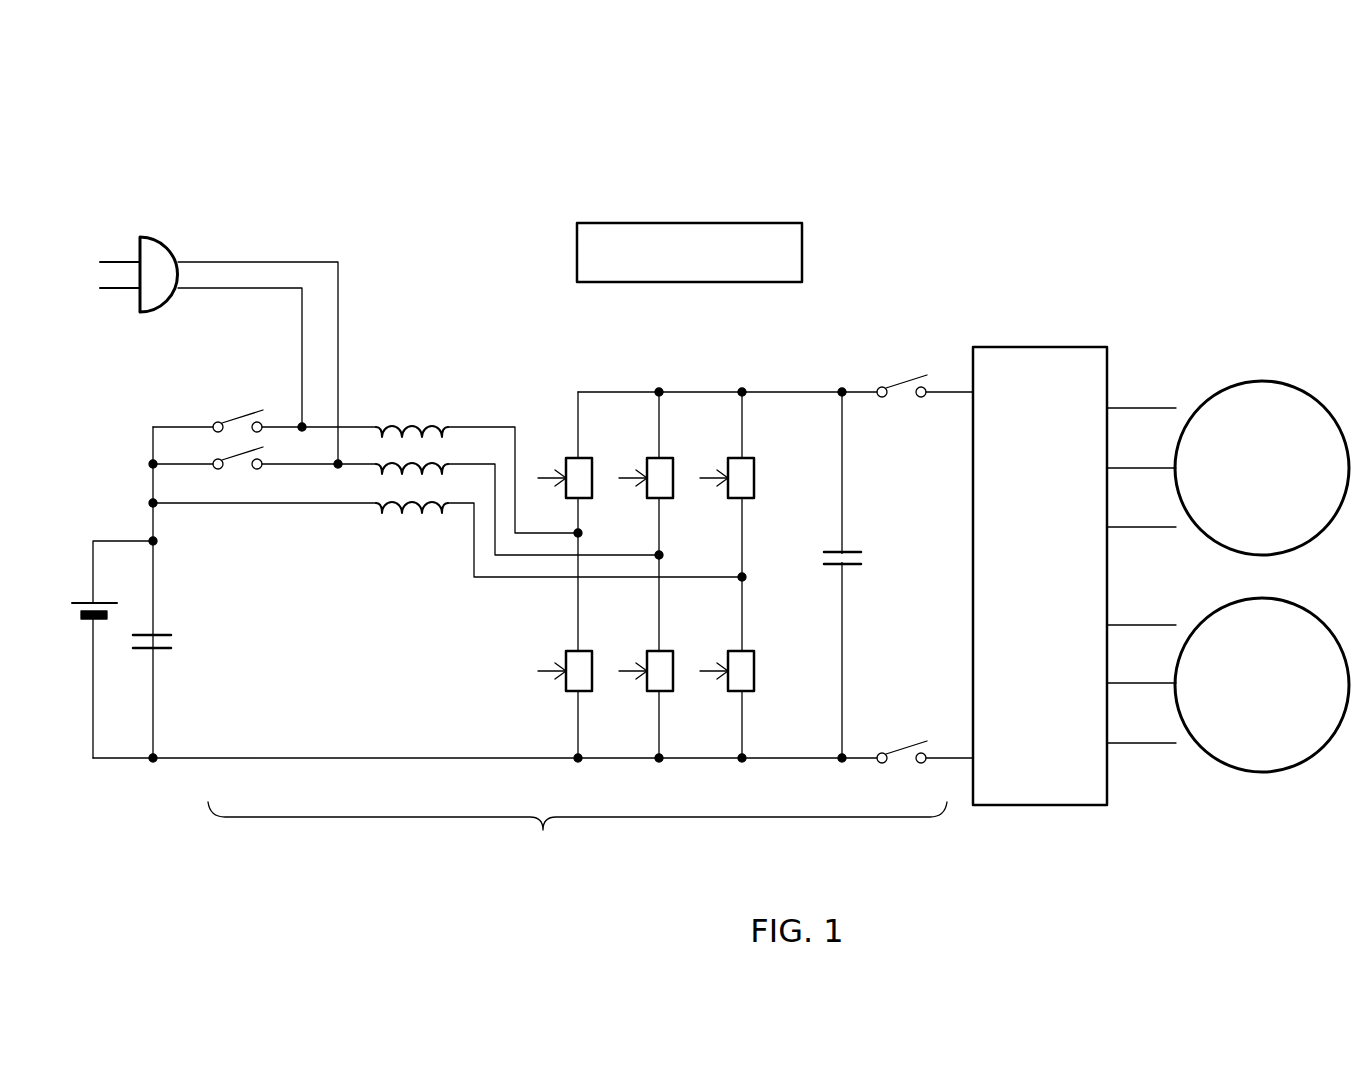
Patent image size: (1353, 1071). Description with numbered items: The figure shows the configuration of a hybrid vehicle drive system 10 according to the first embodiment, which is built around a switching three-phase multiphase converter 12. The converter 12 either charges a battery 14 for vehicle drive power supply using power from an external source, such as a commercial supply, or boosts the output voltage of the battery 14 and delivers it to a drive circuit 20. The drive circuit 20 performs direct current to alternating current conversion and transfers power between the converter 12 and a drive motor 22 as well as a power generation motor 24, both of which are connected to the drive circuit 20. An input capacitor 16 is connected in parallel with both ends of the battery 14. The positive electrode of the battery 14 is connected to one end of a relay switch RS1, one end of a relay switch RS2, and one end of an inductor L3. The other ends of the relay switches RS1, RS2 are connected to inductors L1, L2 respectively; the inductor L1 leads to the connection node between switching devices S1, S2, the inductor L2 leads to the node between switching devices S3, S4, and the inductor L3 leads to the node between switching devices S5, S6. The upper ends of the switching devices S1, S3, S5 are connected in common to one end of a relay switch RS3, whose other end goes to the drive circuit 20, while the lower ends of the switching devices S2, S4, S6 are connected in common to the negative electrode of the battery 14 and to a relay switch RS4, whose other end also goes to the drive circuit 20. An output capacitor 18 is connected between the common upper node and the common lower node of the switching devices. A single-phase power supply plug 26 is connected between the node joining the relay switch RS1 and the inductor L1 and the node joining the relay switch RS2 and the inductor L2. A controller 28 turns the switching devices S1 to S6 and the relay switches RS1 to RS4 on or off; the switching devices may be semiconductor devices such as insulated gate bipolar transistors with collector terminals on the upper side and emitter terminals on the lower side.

The hybrid vehicle drive system 10 is at (150, 135).
The switching three-phase multiphase converter 12 is at (577, 834).
The battery 14 is at (80, 601).
The input capacitor 16 is at (165, 633).
The output capacitor 18 is at (855, 549).
The drive circuit 20 is at (1052, 347).
The drive motor 22 is at (1262, 381).
The power generation motor 24 is at (1253, 773).
The single-phase power supply plug 26 is at (160, 237).
The controller 28 is at (725, 223).
The relay switch RS1 is at (238, 410).
The relay switch RS2 is at (238, 472).
The relay switch RS3 is at (905, 375).
The relay switch RS4 is at (900, 741).
The inductor L1 is at (412, 419).
The inductor L2 is at (428, 455).
The inductor L3 is at (405, 516).
The switching device S1 is at (592, 458).
The switching device S2 is at (592, 651).
The switching device S3 is at (673, 458).
The switching device S4 is at (673, 651).
The switching device S5 is at (754, 458).
The switching device S6 is at (754, 651).